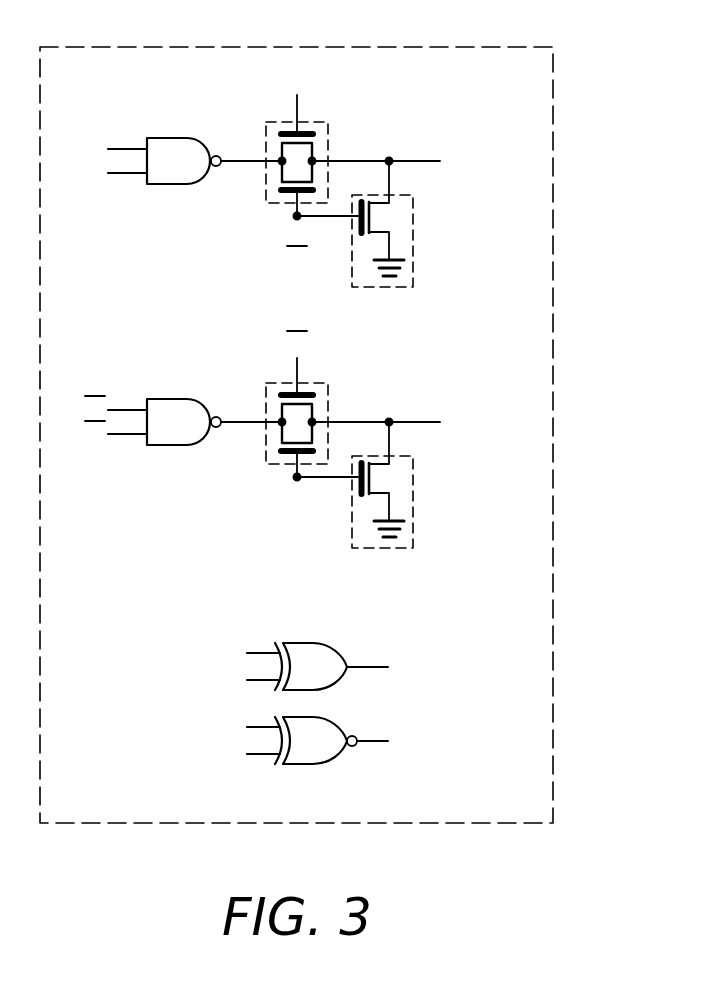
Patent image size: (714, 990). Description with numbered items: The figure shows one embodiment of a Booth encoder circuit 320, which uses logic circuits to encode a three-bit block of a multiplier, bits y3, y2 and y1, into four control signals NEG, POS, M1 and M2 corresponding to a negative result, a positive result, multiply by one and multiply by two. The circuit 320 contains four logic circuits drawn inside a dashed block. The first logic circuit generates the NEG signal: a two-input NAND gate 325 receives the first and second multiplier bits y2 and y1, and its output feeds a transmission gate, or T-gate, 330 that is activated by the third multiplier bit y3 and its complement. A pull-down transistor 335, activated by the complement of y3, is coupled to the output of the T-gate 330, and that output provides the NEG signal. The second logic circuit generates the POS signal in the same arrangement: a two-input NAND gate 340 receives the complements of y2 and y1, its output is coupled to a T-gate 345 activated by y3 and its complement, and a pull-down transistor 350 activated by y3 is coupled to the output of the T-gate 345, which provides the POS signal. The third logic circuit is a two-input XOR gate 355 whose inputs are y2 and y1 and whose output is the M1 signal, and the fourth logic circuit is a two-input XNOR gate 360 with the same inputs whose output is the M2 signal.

The Booth encoder circuit 320 is at (540, 47).
The two-input NAND gate 325 is at (166, 137).
The transmission gate 330 is at (328, 138).
The pull-down transistor 335 is at (413, 240).
The two-input NAND gate 340 is at (166, 398).
The T-gate 345 is at (328, 399).
The pull-down transistor 350 is at (413, 501).
The two-input XOR gate 355 is at (315, 643).
The two-input XNOR gate 360 is at (315, 717).